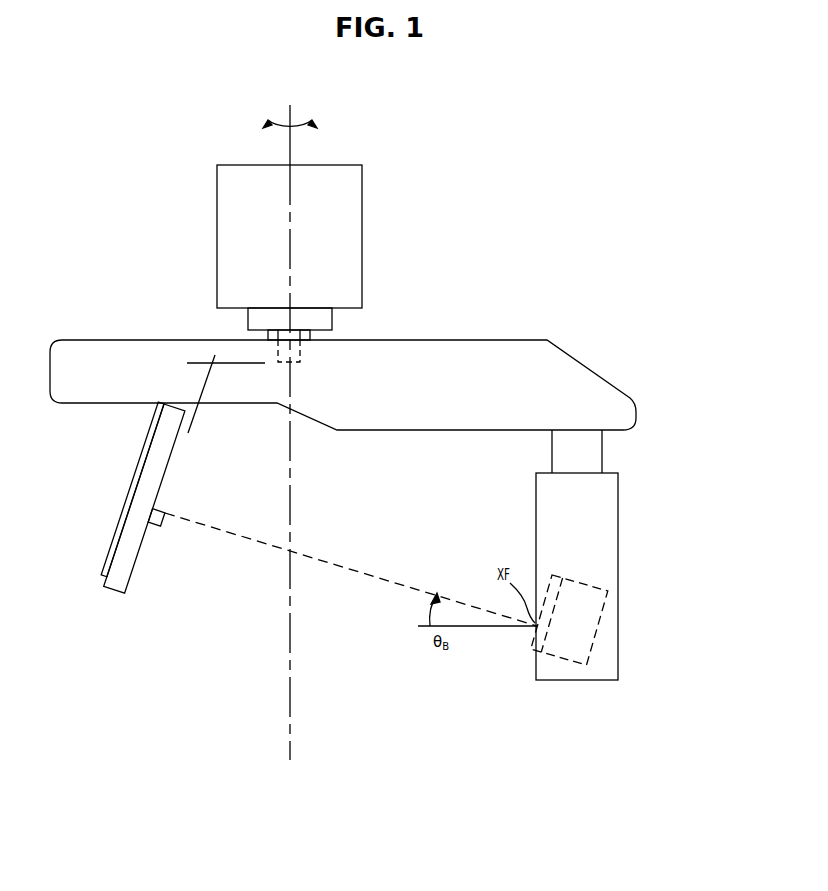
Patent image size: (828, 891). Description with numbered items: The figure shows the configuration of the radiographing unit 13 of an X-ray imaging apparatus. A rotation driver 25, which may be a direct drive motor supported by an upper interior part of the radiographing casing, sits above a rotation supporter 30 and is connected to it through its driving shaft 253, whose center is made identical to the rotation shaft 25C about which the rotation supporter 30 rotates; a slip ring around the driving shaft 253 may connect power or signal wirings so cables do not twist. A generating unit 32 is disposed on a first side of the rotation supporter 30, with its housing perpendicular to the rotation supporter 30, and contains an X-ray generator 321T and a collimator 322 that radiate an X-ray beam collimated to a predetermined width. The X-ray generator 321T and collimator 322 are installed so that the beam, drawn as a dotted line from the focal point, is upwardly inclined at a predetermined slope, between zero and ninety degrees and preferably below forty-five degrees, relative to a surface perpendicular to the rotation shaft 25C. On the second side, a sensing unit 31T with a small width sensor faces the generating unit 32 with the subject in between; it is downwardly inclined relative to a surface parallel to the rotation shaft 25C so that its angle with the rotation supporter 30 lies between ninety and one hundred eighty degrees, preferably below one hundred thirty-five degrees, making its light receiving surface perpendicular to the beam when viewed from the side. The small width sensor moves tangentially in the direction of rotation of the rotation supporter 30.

The radiographing unit 13 is at (514, 282).
The rotation driver 25 is at (330, 258).
The rotation shaft 25C is at (290, 213).
The driving shaft 253 is at (300, 348).
The rotation supporter 30 is at (410, 348).
The sensing unit 31T is at (113, 595).
The generating unit 32 is at (598, 535).
The X-ray generator 321T is at (585, 637).
The collimator 322 is at (532, 647).